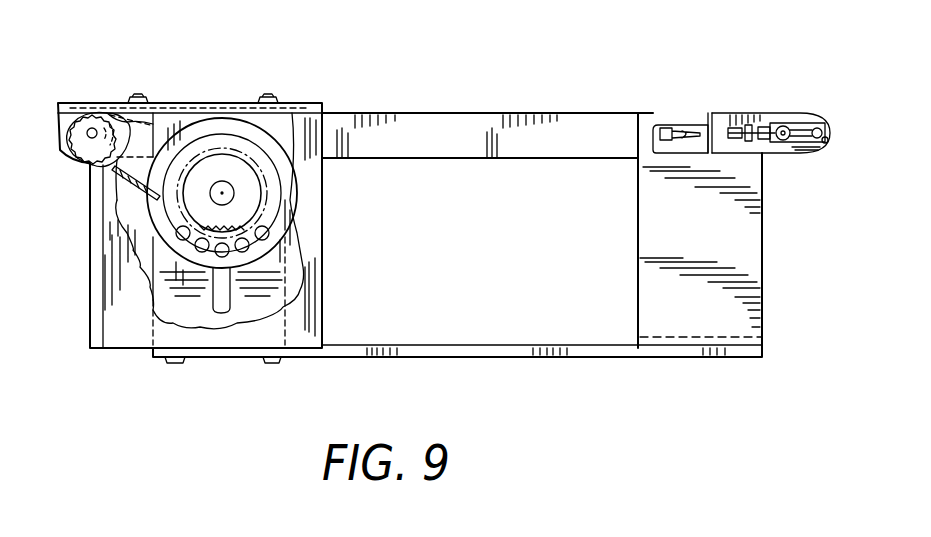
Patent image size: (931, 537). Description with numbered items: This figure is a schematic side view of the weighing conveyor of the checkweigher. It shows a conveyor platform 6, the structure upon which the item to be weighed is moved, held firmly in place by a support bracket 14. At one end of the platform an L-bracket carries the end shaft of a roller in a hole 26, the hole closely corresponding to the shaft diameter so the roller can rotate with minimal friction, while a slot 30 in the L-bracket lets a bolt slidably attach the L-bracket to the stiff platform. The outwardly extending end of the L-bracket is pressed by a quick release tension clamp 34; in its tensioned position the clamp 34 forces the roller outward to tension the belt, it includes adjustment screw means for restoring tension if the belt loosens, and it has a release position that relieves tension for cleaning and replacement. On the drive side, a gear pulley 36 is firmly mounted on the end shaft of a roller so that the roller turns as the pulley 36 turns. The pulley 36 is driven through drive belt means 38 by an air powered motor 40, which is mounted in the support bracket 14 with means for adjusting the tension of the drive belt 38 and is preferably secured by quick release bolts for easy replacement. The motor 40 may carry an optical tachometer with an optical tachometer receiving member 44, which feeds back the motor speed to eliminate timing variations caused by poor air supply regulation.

The conveyor platform 6 is at (626, 108).
The support bracket 14 is at (324, 290).
The hole 26 is at (826, 143).
The slot 30 is at (797, 113).
The quick release tension clamp 34 is at (692, 108).
The gear pulley 36 is at (93, 104).
The drive belt means 38 is at (240, 153).
The air powered motor 40 is at (272, 182).
The optical tachometer receiving member 44 is at (190, 243).